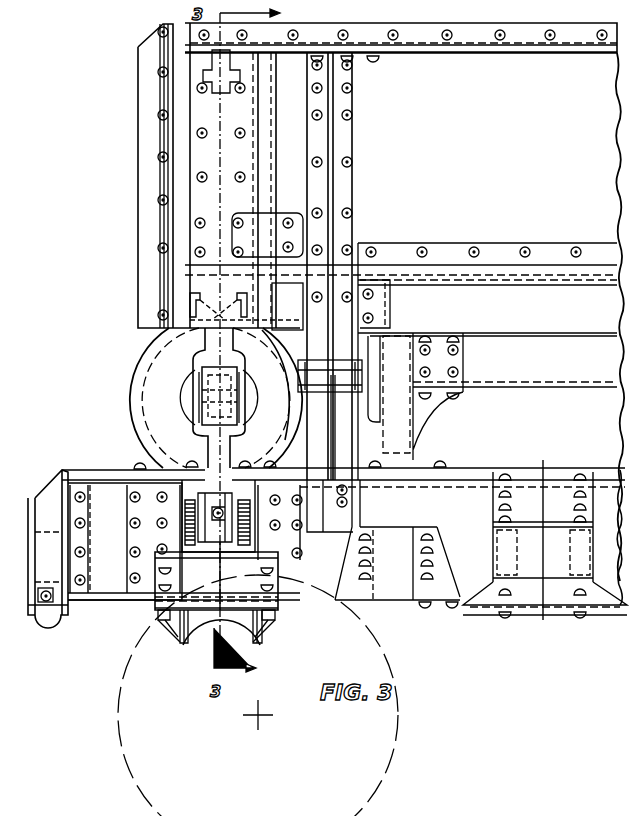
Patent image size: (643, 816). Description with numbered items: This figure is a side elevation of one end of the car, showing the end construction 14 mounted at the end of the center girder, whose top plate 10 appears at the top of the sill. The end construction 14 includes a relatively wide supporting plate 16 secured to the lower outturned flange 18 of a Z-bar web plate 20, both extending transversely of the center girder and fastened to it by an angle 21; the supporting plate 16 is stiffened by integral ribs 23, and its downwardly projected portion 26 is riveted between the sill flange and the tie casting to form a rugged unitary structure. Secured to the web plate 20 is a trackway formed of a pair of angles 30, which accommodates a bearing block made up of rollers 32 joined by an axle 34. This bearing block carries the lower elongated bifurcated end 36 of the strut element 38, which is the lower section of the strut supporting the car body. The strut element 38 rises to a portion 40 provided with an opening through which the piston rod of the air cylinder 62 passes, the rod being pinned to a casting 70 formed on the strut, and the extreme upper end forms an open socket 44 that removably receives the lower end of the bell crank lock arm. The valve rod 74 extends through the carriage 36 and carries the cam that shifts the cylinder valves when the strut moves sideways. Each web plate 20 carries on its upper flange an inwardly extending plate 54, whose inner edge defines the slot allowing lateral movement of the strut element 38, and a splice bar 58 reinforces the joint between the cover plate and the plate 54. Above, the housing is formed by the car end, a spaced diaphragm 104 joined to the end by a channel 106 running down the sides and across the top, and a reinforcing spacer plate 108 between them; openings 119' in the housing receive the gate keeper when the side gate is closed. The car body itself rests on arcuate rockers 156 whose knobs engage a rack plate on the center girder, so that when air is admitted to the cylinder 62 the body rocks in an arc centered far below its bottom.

The top plate 10 is at (107, 470).
The end construction 14 is at (165, 180).
The supporting plate 16 is at (272, 612).
The lower outturned flange 18 is at (160, 560).
The web plate 20 is at (127, 505).
The angle 21 is at (140, 538).
The integral rib 23 is at (178, 645).
The downwardly projected portion 26 is at (240, 568).
The angle 30 is at (158, 600).
The roller 32 is at (165, 568).
The axle 34 is at (224, 542).
The lower elongated bifurcated end 36 is at (185, 515).
The strut element 38 is at (196, 432).
The portion of strut element 40 is at (197, 360).
The open socket 44 is at (197, 307).
The inwardly extending plate 54 is at (150, 468).
The splice bar 58 is at (262, 432).
The air cylinder 62 is at (132, 372).
The casting 70 is at (222, 390).
The valve rod 74 is at (218, 513).
The diaphragm 104 is at (170, 135).
The channel 106 is at (203, 105).
The reinforcing spacer plate 108 is at (247, 192).
The opening 119' is at (176, 50).
The rocker 156 is at (440, 438).